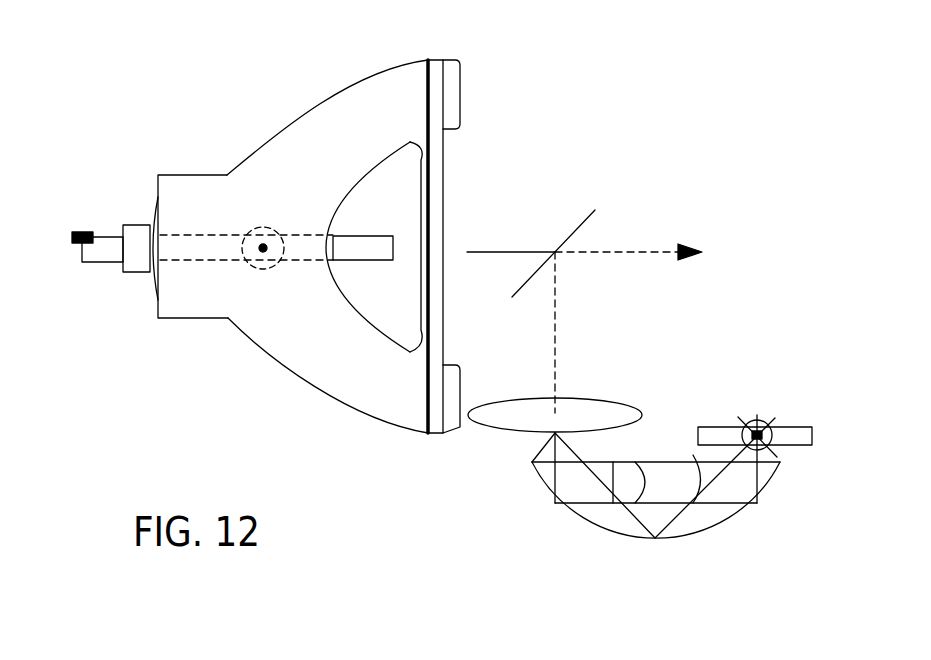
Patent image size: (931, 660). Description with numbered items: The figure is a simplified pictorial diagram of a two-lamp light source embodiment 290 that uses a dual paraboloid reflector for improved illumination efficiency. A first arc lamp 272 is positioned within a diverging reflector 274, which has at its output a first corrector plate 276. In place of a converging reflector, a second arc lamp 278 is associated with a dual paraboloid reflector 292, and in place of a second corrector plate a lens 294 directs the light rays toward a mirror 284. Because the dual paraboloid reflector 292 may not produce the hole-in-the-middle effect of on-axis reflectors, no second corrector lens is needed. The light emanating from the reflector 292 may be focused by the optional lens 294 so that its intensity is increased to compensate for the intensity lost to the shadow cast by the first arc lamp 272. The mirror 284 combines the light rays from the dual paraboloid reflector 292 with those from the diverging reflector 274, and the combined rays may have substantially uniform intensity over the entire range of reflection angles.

The first arc lamp 272 is at (263, 252).
The diverging reflector 274 is at (320, 388).
The first corrector plate 276 is at (443, 160).
The second arc lamp 278 is at (757, 413).
The mirror 284 is at (585, 222).
The embodiment of this invention 290 is at (648, 97).
The dual paraboloid reflector 292 is at (730, 522).
The lens 294 is at (580, 413).